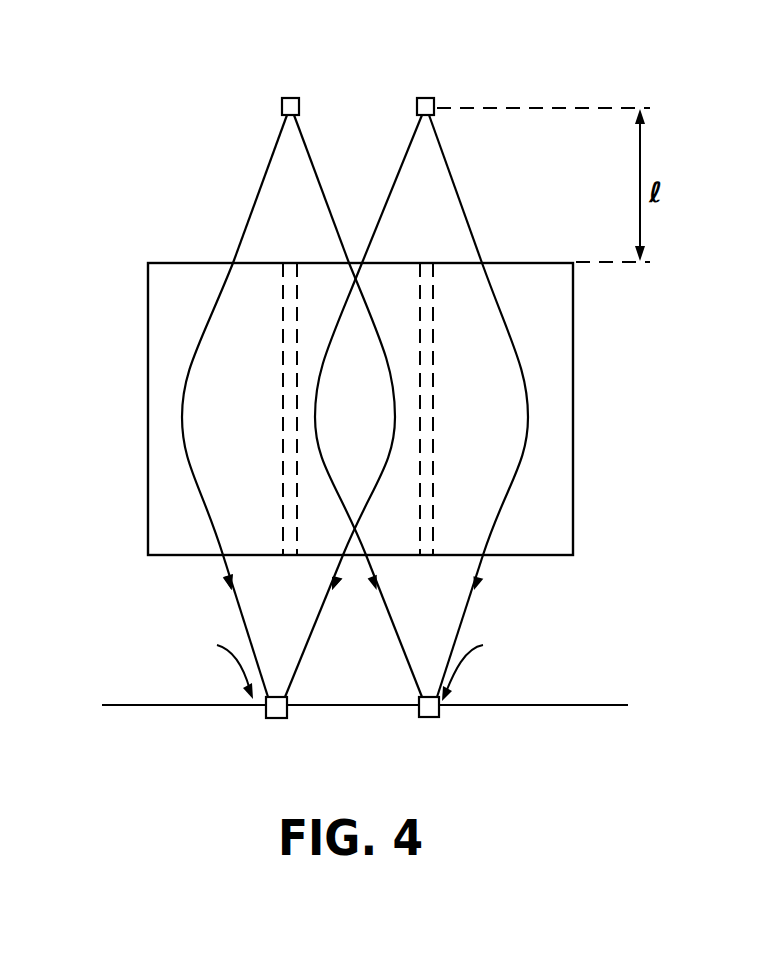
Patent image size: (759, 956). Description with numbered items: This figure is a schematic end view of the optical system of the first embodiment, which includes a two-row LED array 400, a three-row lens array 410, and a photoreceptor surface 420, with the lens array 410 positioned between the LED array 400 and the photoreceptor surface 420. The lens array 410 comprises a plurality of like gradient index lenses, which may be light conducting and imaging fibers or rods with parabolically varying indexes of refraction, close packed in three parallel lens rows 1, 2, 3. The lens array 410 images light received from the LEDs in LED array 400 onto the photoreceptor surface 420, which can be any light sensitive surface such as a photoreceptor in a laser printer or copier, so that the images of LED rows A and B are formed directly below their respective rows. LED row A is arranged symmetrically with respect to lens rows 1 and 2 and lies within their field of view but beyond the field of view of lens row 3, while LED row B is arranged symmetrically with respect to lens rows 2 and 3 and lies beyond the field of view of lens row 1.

The two-row LED array 400 is at (413, 105).
The three-row lens array 410 is at (399, 409).
The photoreceptor surface 420 is at (555, 706).
The lens row 1 is at (219, 409).
The lens row 2 is at (358, 409).
The lens row 3 is at (509, 409).